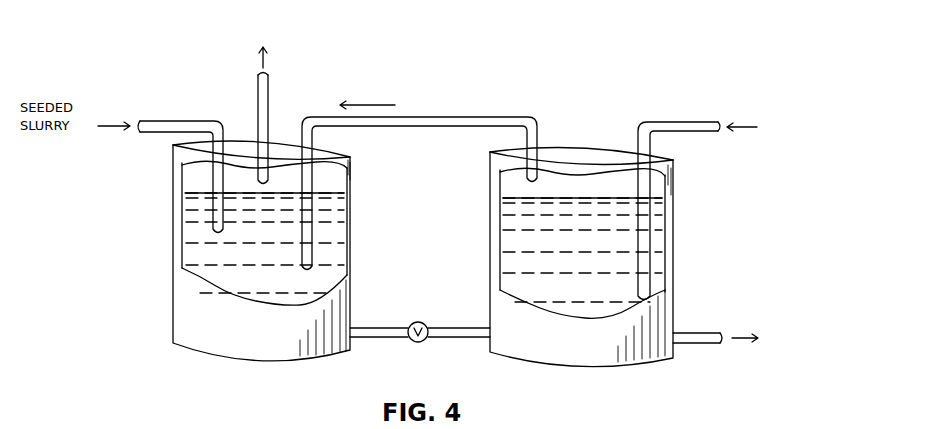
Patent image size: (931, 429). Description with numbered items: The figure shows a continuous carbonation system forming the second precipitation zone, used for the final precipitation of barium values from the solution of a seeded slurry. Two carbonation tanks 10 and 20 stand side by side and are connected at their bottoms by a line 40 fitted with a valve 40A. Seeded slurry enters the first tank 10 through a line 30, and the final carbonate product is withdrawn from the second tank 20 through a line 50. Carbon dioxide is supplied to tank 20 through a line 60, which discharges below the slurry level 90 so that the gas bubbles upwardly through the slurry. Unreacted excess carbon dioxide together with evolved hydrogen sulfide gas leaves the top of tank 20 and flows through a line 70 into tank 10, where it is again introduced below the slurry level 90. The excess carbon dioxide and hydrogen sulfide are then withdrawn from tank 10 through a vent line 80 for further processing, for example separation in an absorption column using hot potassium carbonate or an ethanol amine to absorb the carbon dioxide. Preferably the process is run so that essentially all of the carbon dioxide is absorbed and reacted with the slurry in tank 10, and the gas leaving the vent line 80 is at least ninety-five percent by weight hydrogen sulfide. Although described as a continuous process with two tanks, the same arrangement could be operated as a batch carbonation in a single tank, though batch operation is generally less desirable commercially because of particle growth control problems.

The carbonation tank 10 is at (265, 290).
The carbonation tank 20 is at (581, 300).
The line 30 is at (179, 121).
The line 40 is at (452, 338).
The valve 40A is at (418, 342).
The line 50 is at (690, 345).
The line 60 is at (684, 122).
The line 70 is at (404, 126).
The vent line 80 is at (258, 97).
The slurry level 90 is at (206, 196).